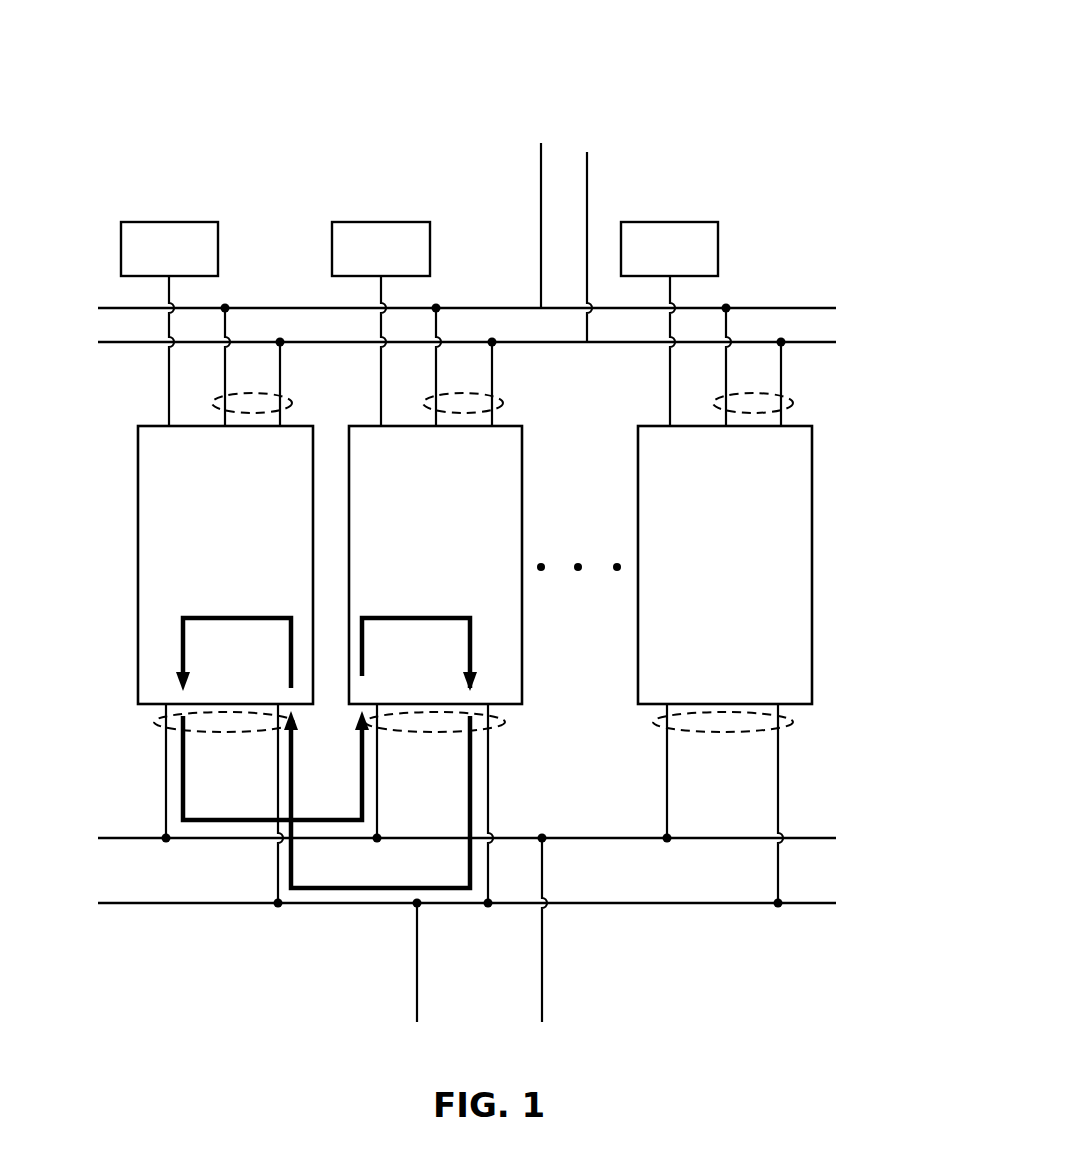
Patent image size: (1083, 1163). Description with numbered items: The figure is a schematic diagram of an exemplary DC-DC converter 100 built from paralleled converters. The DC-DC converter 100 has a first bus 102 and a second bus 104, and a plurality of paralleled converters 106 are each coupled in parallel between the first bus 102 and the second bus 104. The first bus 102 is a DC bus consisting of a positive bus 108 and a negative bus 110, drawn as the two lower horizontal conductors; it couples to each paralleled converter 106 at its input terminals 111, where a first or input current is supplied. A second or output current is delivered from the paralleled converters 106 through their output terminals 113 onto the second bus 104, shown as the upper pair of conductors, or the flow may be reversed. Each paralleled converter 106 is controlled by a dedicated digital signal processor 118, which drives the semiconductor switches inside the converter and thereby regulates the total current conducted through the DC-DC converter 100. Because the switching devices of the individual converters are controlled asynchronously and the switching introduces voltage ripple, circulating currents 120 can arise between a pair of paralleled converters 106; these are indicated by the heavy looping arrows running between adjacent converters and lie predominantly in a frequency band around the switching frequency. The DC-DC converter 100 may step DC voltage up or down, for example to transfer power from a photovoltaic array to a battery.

The DC-DC converter 100 is at (622, 54).
The first bus 102 is at (136, 918).
The second bus 104 is at (328, 294).
The paralleled converters 106 is at (138, 609).
The positive bus 108 is at (624, 838).
The negative bus 110 is at (735, 905).
The input terminals 111 is at (143, 723).
The output terminals 113 is at (300, 402).
The digital signal processor (DSP) 118 is at (163, 222).
The circulating currents 120 is at (472, 773).